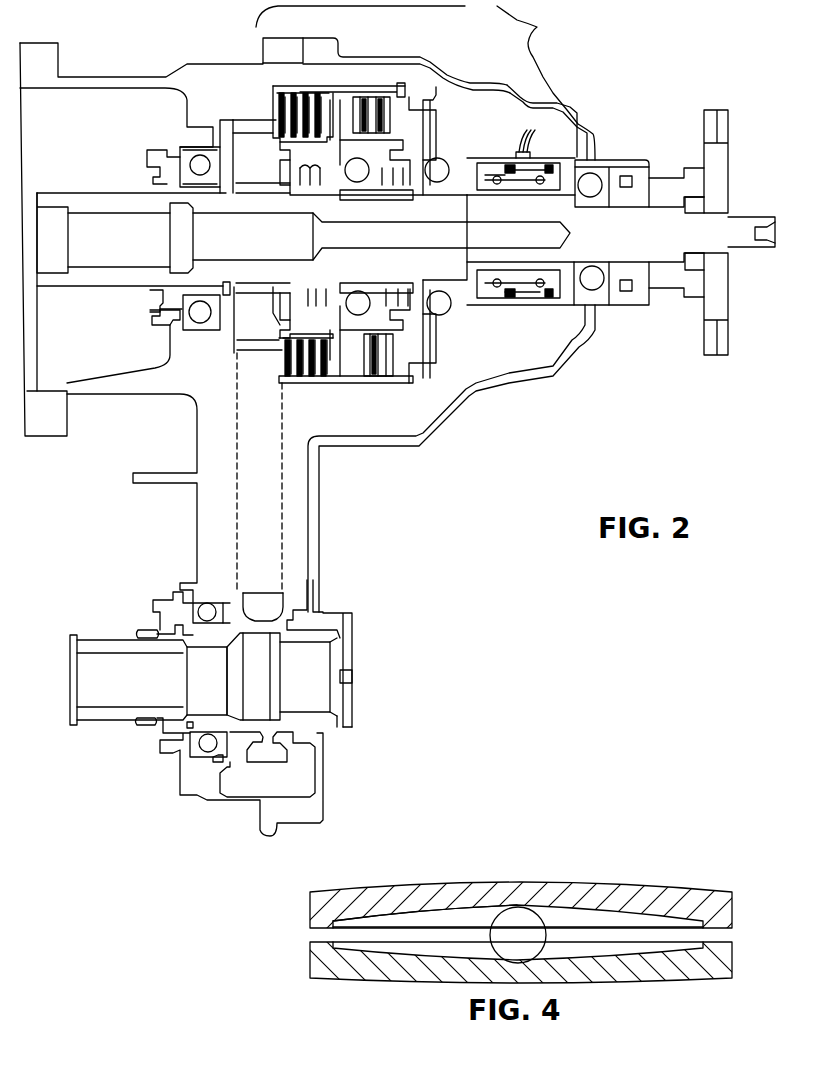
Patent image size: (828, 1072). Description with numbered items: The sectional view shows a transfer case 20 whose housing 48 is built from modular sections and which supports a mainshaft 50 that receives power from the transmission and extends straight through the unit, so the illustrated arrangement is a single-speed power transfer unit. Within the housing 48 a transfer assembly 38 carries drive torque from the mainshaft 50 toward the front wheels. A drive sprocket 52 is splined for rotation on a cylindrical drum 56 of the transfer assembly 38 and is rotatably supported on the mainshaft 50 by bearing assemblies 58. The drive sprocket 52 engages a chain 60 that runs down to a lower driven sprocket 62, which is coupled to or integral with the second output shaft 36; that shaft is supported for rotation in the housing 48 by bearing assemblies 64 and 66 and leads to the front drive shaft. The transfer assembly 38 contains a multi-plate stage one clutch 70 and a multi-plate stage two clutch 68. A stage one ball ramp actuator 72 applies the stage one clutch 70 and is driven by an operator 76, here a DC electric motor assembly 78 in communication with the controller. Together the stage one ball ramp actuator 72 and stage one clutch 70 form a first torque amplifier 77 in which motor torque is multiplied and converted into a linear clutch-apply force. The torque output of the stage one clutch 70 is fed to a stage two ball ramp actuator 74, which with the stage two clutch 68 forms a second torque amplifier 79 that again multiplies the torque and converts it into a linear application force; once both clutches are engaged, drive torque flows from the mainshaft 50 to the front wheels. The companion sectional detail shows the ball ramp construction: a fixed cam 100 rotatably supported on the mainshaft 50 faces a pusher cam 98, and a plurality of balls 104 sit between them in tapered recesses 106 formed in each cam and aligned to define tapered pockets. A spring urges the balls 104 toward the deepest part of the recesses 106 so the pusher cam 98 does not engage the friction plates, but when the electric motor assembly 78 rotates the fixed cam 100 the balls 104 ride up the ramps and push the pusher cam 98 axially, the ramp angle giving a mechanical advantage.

In FIG. 2, the transfer case 20 is at (453, 498).
In FIG. 2, the second output shaft 36 is at (103, 643).
In FIG. 2, the transfer assembly 38 is at (425, 83).
In FIG. 2, the housing 48 is at (395, 58).
In FIG. 2, the mainshaft 50 is at (105, 193).
In FIG. 2, the drive sprocket 52 is at (238, 123).
In FIG. 2, the cylindrical drum 56 is at (273, 97).
In FIG. 2, the bearing assemblies 58 is at (233, 197).
In FIG. 2, the chain 60 is at (236, 446).
In FIG. 2, the driven sprocket 62 is at (268, 602).
In FIG. 2, the bearing assembly 64 is at (195, 600).
In FIG. 2, the bearing assembly 66 is at (353, 730).
In FIG. 2, the stage 2 clutch 68 is at (314, 394).
In FIG. 2, the stage 1 clutch 70 is at (383, 393).
In FIG. 2, the stage 1 ball ramp actuator 72 is at (443, 333).
In FIG. 2, the stage 2 ball ramp actuator 74 is at (359, 284).
In FIG. 2, the operator 76 is at (535, 322).
In FIG. 2, the first torque amplifier 77 is at (480, 143).
In FIG. 2, the electric motor assembly 78 is at (505, 147).
In FIG. 2, the second torque amplifier 79 is at (317, 86).
In FIG. 4, the pusher cam 98 is at (625, 967).
In FIG. 4, the fixed cam 100 is at (607, 897).
In FIG. 4, the balls 104 is at (527, 917).
In FIG. 4, the tapered recesses 106 is at (453, 917).